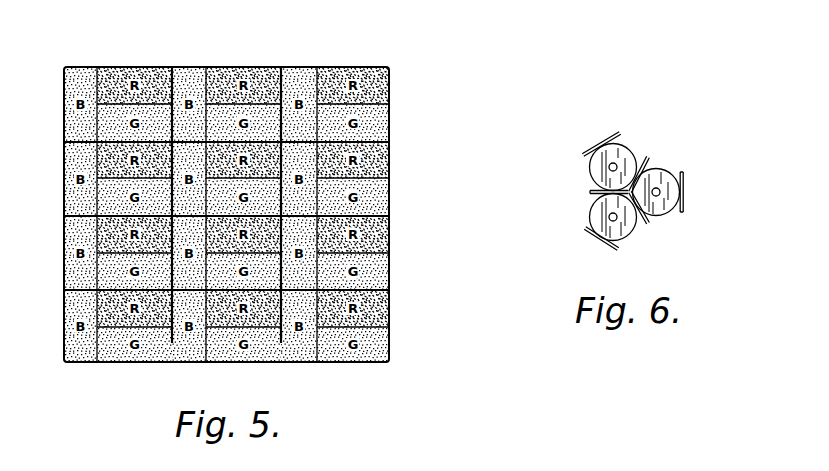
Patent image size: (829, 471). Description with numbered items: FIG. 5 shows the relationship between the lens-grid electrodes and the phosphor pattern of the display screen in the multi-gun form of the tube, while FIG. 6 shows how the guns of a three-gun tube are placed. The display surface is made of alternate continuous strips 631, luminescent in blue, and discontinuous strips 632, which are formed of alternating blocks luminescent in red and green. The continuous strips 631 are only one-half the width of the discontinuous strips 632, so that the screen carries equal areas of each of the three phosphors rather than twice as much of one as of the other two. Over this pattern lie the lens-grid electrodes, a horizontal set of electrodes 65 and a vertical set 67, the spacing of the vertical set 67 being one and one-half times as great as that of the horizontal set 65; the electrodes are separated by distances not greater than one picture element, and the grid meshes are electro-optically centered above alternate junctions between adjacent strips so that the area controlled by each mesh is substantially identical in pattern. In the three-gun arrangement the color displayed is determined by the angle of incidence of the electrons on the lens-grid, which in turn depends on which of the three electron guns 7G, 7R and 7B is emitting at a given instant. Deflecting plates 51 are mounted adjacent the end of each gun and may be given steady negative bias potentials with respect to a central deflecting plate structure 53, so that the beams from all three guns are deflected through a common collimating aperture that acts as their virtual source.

In FIG. 5, the continuous strips 631 is at (193, 67).
In FIG. 5, the discontinuous strips 632 is at (267, 67).
In FIG. 5, the horizontal set of electrodes 65 is at (367, 289).
In FIG. 5, the vertical set of electrodes 67 is at (285, 375).
In FIG. 6, the electron gun 7G is at (628, 147).
In FIG. 6, the electron gun 7R is at (593, 210).
In FIG. 6, the electron gun 7B is at (667, 215).
In FIG. 6, the central deflecting plate structure 53 is at (643, 162).
In FIG. 6, the deflecting plates 51 is at (602, 142).